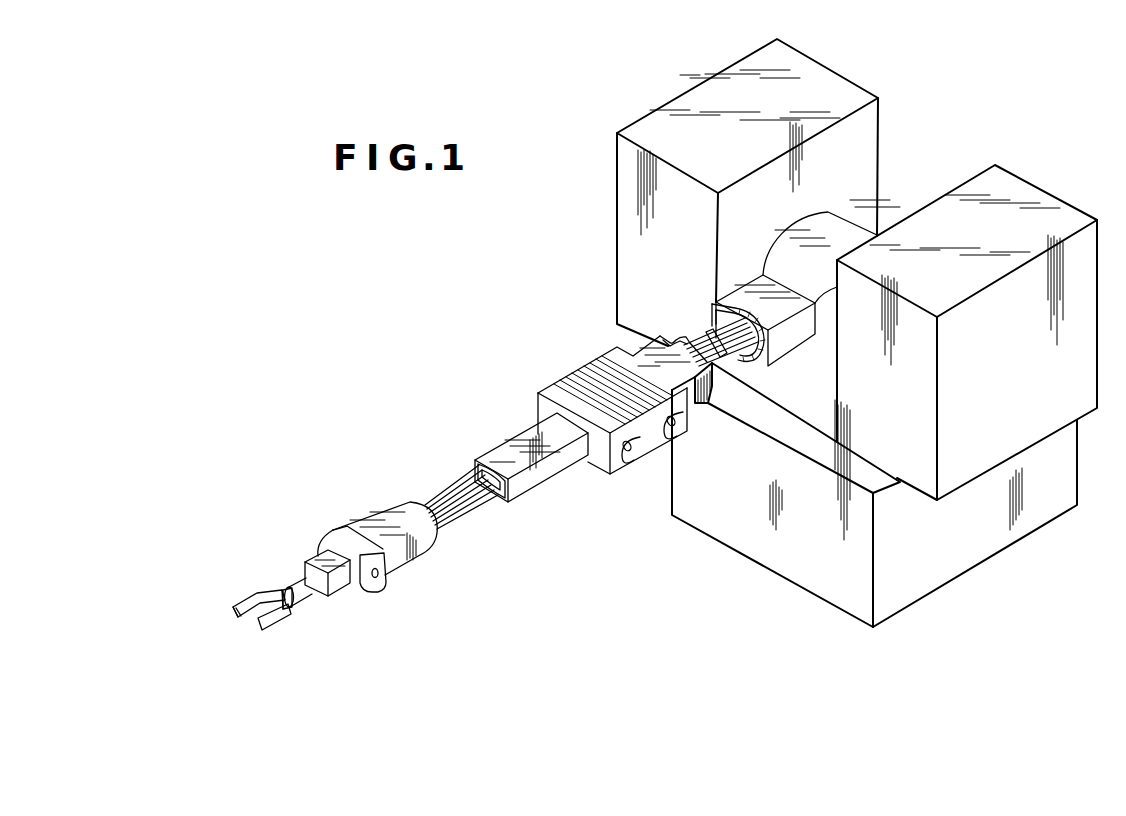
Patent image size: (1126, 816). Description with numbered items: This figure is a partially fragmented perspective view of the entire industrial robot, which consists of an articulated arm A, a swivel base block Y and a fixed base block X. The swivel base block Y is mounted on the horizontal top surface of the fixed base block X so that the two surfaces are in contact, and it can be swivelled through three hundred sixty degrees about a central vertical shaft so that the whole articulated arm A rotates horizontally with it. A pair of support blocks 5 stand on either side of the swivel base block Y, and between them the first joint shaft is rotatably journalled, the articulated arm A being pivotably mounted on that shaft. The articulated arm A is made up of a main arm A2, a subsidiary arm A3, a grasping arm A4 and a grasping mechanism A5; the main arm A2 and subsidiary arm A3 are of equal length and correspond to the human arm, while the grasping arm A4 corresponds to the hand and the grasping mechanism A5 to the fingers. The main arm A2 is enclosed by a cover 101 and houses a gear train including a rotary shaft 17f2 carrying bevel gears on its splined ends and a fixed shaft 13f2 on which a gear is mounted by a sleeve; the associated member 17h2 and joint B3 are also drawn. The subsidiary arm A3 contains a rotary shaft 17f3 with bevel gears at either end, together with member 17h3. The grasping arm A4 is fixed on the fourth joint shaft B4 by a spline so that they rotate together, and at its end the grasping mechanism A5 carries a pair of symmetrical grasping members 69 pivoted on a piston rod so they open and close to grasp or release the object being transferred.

The support block 5 is at (866, 269).
The swivel base block Y is at (1008, 178).
The fixed base block X is at (747, 548).
The cover 101 is at (794, 303).
The rotary shaft 17f2 is at (733, 357).
The hoses 17h2 is at (704, 335).
The main arm A2 is at (690, 332).
The articulated arm A is at (600, 391).
The bearing boss B3 is at (631, 447).
The fixed shaft 13f2 is at (673, 425).
The subsidiary arm A3 is at (482, 414).
The hoses 17h3 is at (433, 495).
The rotary shaft 17f3 is at (465, 508).
The fourth joint shaft B4 is at (375, 577).
The grasping arm A4 is at (317, 558).
The grasping mechanism A5 is at (252, 613).
The grasping members 69 is at (260, 628).